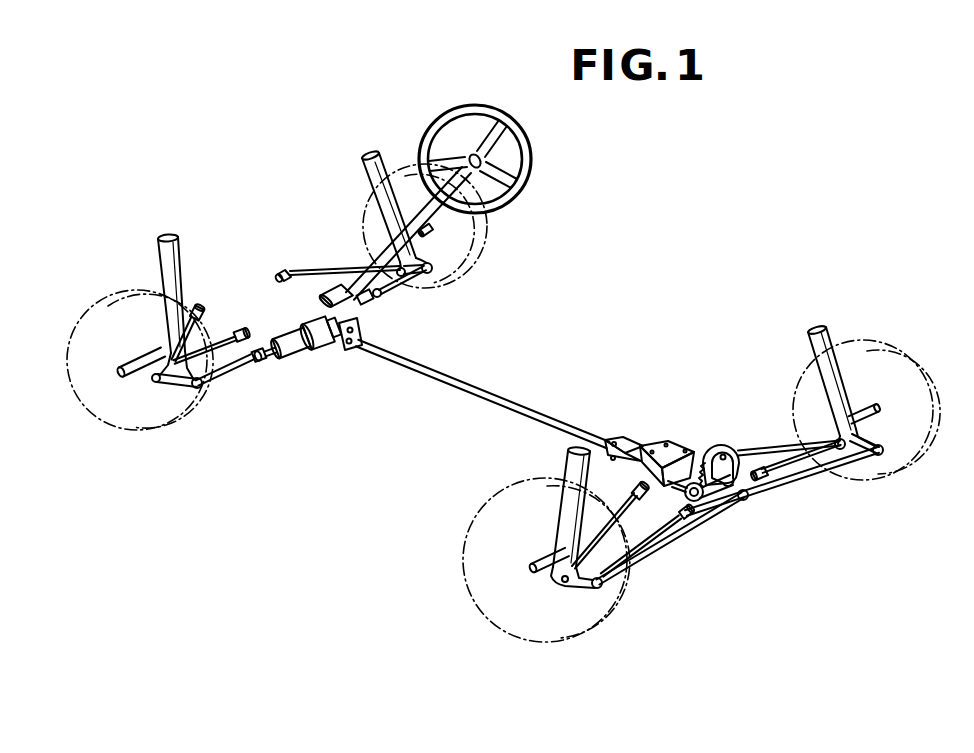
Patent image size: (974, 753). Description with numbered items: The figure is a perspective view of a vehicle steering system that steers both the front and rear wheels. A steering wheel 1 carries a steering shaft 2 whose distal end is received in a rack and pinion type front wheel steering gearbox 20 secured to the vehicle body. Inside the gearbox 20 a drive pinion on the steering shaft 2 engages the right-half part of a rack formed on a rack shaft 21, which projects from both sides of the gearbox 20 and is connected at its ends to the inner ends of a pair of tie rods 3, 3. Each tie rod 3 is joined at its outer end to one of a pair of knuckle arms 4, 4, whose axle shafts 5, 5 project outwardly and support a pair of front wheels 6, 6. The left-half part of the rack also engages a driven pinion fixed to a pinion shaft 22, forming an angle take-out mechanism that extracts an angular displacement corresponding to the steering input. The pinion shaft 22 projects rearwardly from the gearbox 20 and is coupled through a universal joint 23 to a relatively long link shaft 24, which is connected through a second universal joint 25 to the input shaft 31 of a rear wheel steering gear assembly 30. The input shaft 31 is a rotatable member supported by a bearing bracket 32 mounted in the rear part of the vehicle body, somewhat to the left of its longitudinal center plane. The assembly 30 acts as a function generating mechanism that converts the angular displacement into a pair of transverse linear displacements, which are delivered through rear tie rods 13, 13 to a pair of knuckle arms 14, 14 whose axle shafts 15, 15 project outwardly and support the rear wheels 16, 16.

The steering wheel 1 is at (517, 140).
The steering shaft 2 is at (373, 255).
The tie rods 3 is at (403, 286).
The knuckle arms 4 is at (430, 253).
The axle shafts 5 is at (137, 360).
The front wheels 6 is at (110, 408).
The tie rods 13 is at (641, 560).
The knuckle arms 14 is at (591, 588).
The axle shafts 15 is at (538, 558).
The rear wheels 16 is at (512, 627).
The front wheel steering gearbox 20 is at (295, 310).
The rack shaft 21 is at (276, 360).
The pinion shaft 22 is at (336, 339).
The universal joint 23 is at (348, 350).
The link shaft 24 is at (457, 381).
The universal joint 25 is at (615, 440).
The rear wheel steering gear assembly 30 is at (722, 444).
The input shaft 31 is at (655, 532).
The bearing bracket 32 is at (670, 442).